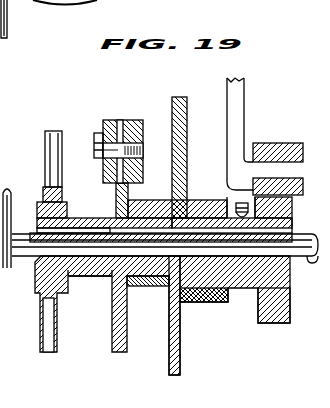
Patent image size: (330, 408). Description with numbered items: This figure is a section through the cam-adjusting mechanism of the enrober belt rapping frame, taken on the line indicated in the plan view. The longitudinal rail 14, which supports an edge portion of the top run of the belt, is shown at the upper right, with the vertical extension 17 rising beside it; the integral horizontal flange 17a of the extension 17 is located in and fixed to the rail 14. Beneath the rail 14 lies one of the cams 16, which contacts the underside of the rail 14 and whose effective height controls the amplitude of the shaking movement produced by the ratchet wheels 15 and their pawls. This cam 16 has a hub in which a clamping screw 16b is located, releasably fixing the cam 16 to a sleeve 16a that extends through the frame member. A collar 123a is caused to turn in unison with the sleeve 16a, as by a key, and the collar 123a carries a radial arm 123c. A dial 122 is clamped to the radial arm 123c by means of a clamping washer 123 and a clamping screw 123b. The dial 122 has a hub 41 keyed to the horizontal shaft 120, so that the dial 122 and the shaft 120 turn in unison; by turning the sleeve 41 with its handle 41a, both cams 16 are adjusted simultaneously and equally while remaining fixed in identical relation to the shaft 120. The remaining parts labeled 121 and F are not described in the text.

The ratchet wheel 15 is at (86, 357).
The handle 41a is at (55, 157).
The hub (sleeve) 41 is at (94, 262).
The clamping washer 123 is at (112, 120).
The dial 122 is at (125, 121).
The radial arm 123c is at (148, 162).
The clamping screw 123b is at (97, 133).
The vertical extension 17 is at (240, 90).
The longitudinal rail 14 is at (263, 146).
The horizontal flange 17a is at (293, 169).
The clamping screw 16b is at (237, 203).
The sleeve 16a is at (288, 227).
The cam 16 is at (272, 322).
The shaft 120 is at (305, 258).
The collar 123a is at (145, 286).
The block 121 is at (207, 302).
The force direction F is at (181, 360).